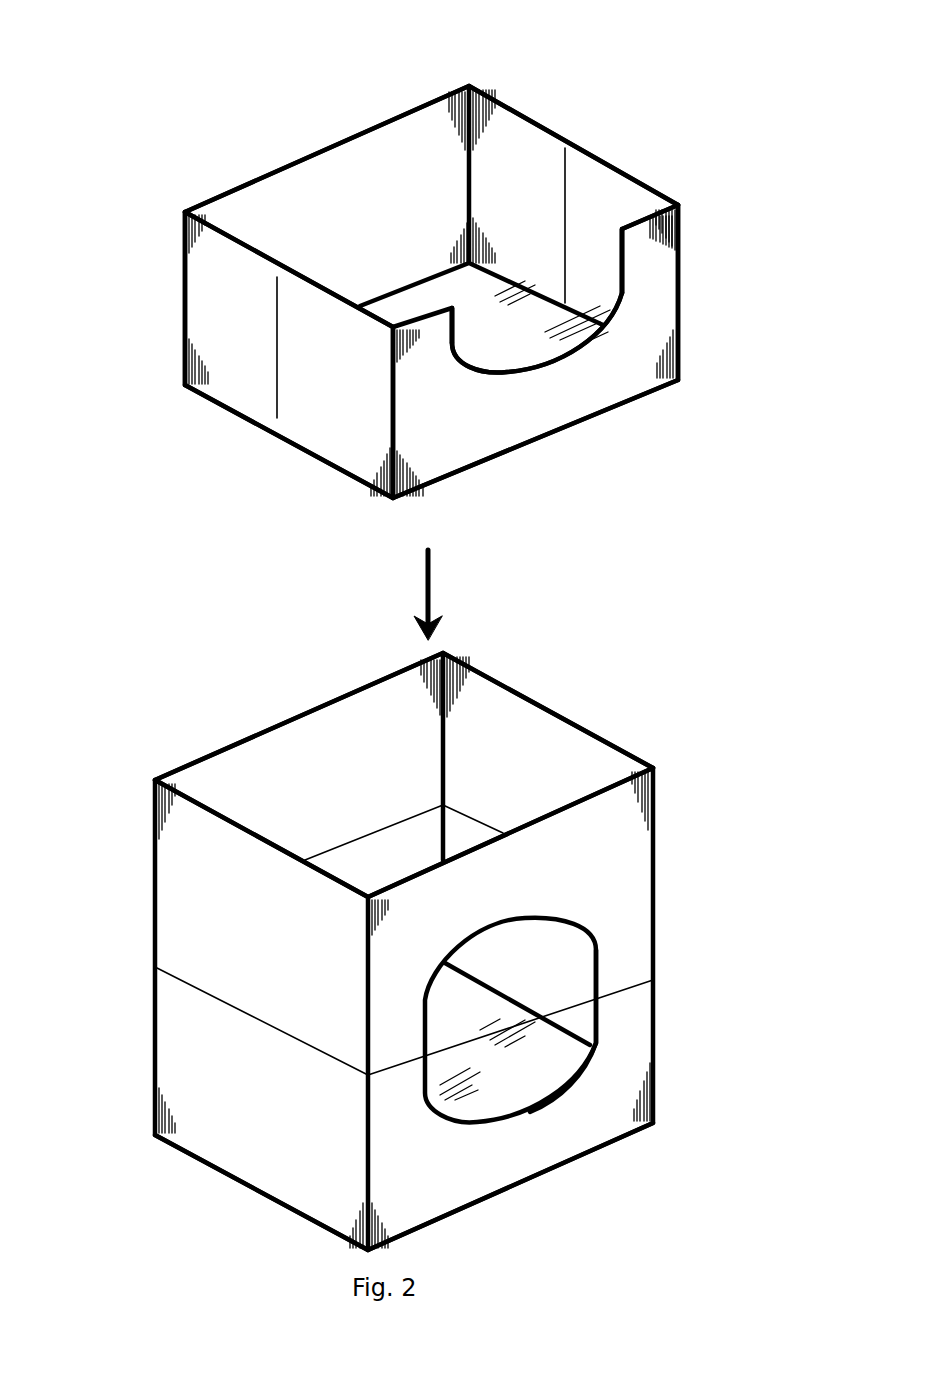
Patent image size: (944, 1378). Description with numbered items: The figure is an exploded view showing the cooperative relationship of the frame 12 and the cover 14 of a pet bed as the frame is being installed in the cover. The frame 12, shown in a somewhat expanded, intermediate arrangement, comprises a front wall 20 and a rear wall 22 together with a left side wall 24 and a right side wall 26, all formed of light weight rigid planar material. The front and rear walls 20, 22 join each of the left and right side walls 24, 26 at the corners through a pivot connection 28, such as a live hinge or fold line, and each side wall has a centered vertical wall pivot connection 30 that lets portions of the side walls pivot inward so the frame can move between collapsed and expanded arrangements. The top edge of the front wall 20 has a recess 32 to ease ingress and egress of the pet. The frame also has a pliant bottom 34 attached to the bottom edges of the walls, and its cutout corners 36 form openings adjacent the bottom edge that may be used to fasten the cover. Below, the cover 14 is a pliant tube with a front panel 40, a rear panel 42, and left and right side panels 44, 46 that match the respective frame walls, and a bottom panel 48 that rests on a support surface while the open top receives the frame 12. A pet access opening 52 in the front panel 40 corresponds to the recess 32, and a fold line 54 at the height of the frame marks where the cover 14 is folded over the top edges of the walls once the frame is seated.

The frame 12 is at (177, 212).
The cover 14 is at (147, 780).
The front wall 20 is at (642, 303).
The rear wall 22 is at (318, 195).
The left side wall 24 is at (243, 313).
The right side wall 26 is at (522, 178).
The pivot connection 28 is at (183, 283).
The wall pivot connection 30 is at (558, 216).
The recess 32 is at (570, 362).
The bottom 34 is at (472, 340).
The cutout corners 36 is at (463, 260).
The front panel 40 is at (630, 1015).
The rear panel 42 is at (325, 743).
The left side panel 44 is at (237, 933).
The right side panel 46 is at (532, 733).
The bottom panel 48 is at (523, 1065).
The pet access opening 52 is at (592, 1065).
The fold line 54 is at (243, 1015).